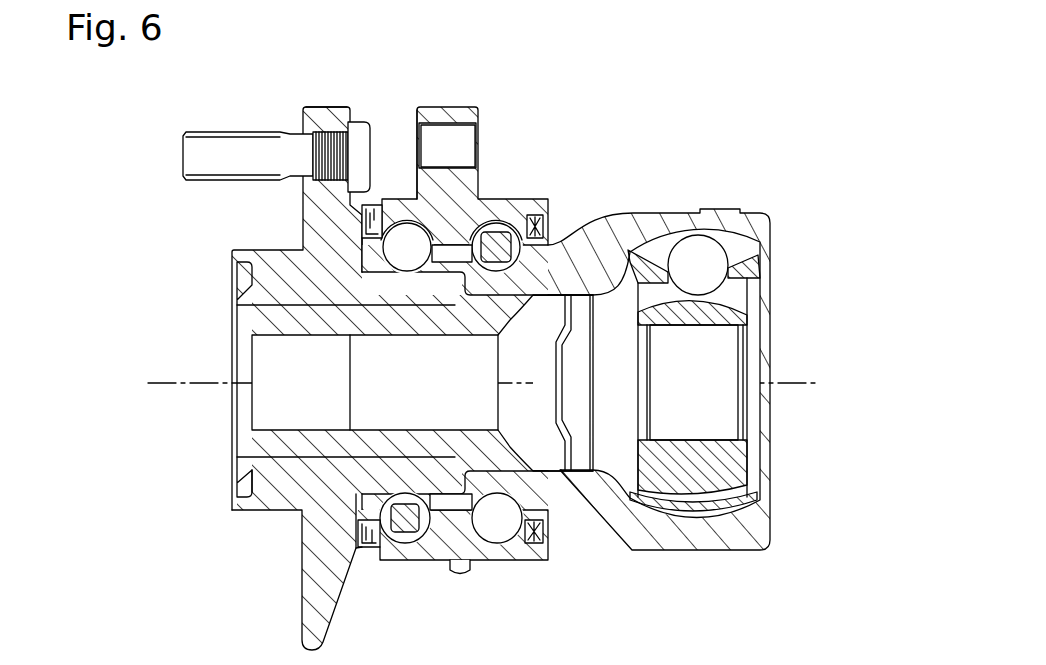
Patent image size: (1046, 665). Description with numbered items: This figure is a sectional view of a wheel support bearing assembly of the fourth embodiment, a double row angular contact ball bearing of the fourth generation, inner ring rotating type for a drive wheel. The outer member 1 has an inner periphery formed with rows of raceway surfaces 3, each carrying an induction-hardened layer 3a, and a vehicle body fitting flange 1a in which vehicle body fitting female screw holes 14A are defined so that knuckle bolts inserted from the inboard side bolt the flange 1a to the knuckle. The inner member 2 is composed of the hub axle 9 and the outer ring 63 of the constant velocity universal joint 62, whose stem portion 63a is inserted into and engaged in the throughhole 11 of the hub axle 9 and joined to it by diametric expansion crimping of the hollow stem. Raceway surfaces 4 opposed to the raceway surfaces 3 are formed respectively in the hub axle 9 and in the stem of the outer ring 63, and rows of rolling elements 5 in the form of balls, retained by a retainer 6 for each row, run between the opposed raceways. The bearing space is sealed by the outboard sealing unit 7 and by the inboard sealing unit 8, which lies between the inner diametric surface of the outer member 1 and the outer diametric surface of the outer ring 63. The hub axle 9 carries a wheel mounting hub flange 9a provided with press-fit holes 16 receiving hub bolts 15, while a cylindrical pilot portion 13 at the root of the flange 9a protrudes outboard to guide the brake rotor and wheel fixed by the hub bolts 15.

The outer member 1 is at (453, 357).
The vehicle body fitting flange 1a is at (437, 128).
The vehicle body fitting female screw holes 14A is at (453, 130).
The inner member 2 is at (351, 344).
The raceway surfaces 3 is at (392, 541).
The hardened layer 3a is at (415, 225).
The raceway surfaces 4 is at (385, 498).
The rolling elements 5 is at (356, 549).
The retainer 6 is at (440, 509).
The outboard sealing unit 7 is at (364, 228).
The inboard sealing unit 8 is at (545, 236).
The hub axle 9 is at (357, 344).
The wheel mounting hub flange 9a is at (336, 107).
The throughhole 11 is at (265, 400).
The pilot portion 13 is at (232, 250).
The hub bolt 15 is at (276, 125).
The press-fit hole 16 is at (313, 148).
The constant velocity universal joint 62 is at (818, 212).
The outer ring of constant velocity universal joint 63 is at (280, 322).
The stem portion 63a is at (432, 325).